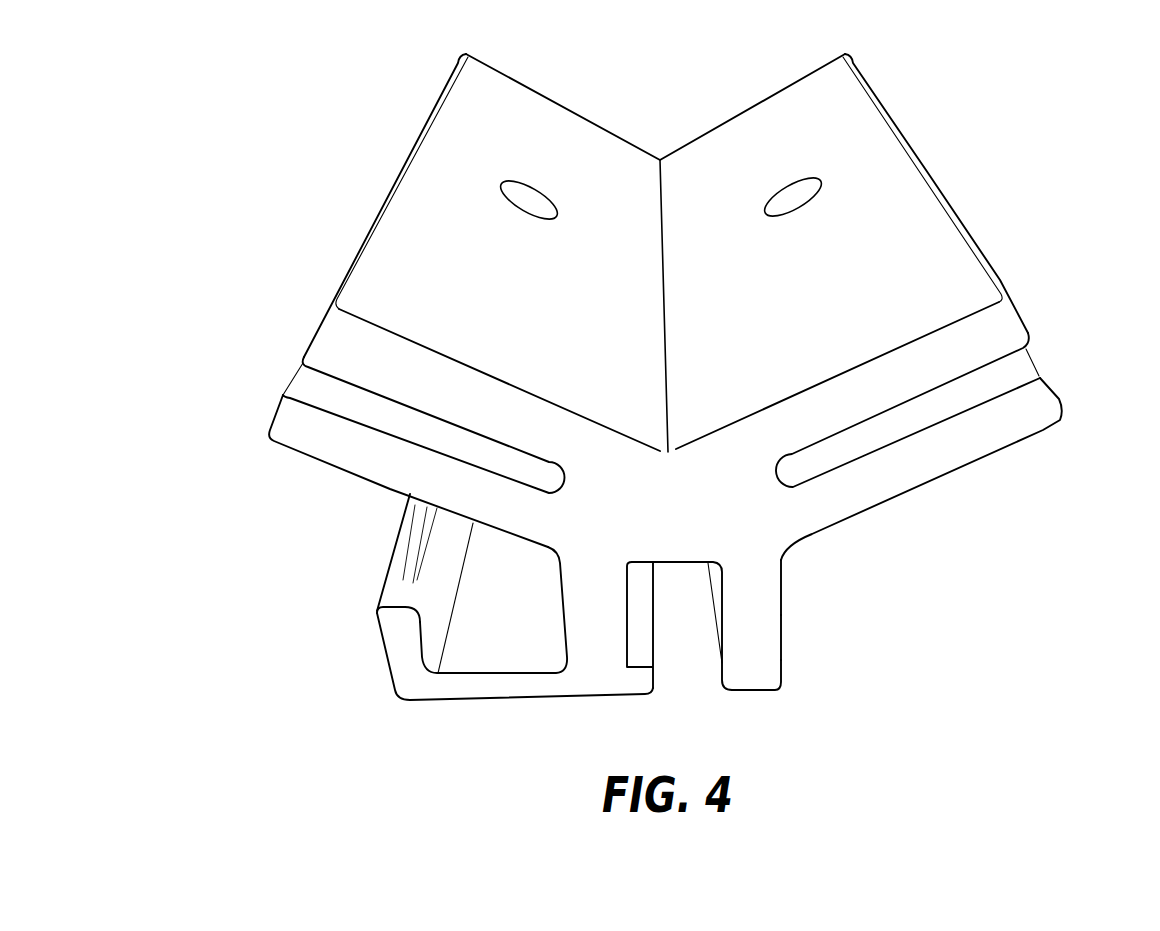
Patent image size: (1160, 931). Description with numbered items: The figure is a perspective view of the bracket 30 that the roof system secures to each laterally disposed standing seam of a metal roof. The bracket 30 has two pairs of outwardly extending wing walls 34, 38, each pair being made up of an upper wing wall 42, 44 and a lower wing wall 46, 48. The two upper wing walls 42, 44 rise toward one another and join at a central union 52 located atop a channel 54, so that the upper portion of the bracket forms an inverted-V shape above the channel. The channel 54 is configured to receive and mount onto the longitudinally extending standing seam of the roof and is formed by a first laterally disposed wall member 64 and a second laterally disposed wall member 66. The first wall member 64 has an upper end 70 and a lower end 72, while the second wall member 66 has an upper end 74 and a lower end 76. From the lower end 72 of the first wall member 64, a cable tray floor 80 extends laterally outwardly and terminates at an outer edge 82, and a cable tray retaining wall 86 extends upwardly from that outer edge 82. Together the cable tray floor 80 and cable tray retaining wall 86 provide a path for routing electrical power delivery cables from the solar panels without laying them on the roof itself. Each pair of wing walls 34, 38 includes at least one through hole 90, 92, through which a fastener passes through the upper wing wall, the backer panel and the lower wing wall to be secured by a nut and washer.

The bracket 30 is at (716, 107).
The wing wall pair 34 is at (277, 297).
The wing wall pair 38 is at (1042, 292).
The upper wing wall 42 is at (353, 260).
The upper wing wall 44 is at (930, 215).
The lower wing wall 46 is at (271, 430).
The lower wing wall 48 is at (1065, 409).
The central union 52 is at (717, 498).
The channel 54 is at (695, 671).
The first laterally disposed wall member 64 is at (592, 657).
The second laterally disposed wall member 66 is at (763, 643).
The upper end 70 is at (590, 553).
The lower end 72 is at (623, 690).
The upper end 74 is at (763, 568).
The lower end 76 is at (768, 682).
The cable tray floor 80 is at (473, 657).
The outer edge 82 is at (408, 698).
The cable tray retaining wall 86 is at (383, 625).
The through hole 90 is at (523, 193).
The through hole 92 is at (793, 197).